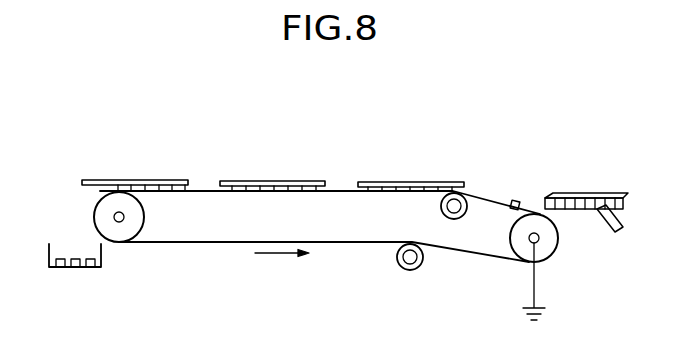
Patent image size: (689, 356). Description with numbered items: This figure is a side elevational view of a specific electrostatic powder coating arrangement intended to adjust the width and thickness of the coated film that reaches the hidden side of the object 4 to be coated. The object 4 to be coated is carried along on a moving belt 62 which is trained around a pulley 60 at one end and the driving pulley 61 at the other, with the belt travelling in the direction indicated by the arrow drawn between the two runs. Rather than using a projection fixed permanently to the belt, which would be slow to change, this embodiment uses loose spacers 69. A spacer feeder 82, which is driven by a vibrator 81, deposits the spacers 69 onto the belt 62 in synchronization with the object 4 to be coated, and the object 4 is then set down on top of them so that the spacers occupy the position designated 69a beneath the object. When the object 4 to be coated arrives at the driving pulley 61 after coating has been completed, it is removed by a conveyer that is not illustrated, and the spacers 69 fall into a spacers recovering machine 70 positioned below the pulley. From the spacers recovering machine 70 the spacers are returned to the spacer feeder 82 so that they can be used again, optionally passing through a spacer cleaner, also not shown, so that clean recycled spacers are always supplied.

The object to be coated 4 is at (418, 181).
The drive roller 60 is at (523, 247).
The driving pulley 61 is at (95, 222).
The conveyor belt 62 is at (485, 194).
The spacer 69 is at (521, 200).
The spacers located under the object 69a is at (273, 154).
The spacers recovering machine 70 is at (47, 258).
The vibrator 81 is at (627, 220).
The spacer feeder 82 is at (598, 193).